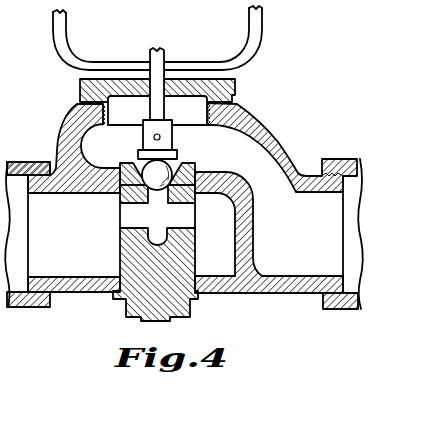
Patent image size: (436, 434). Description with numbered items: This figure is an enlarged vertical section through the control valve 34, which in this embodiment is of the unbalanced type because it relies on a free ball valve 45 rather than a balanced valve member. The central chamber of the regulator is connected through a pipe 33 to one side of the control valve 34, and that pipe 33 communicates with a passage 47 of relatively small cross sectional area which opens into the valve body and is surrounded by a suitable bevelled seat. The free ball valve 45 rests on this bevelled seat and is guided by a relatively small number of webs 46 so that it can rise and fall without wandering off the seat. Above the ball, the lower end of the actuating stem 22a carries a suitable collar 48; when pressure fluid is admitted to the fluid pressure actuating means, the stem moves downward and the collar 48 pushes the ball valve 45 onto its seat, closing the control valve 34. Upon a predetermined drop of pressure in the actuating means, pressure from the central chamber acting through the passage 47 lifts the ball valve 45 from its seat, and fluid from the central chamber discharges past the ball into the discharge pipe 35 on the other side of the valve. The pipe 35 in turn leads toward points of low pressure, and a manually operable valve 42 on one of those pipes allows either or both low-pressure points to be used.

The actuating stem 22a is at (165, 59).
The pipe 33 is at (47, 303).
The control valve 34 is at (283, 147).
The pipe 35 is at (322, 306).
The manually operable valve 42 is at (137, 163).
The free ball valve 45 is at (171, 167).
The webs 46 is at (198, 170).
The passage 47 is at (152, 191).
The collar 48 is at (169, 154).